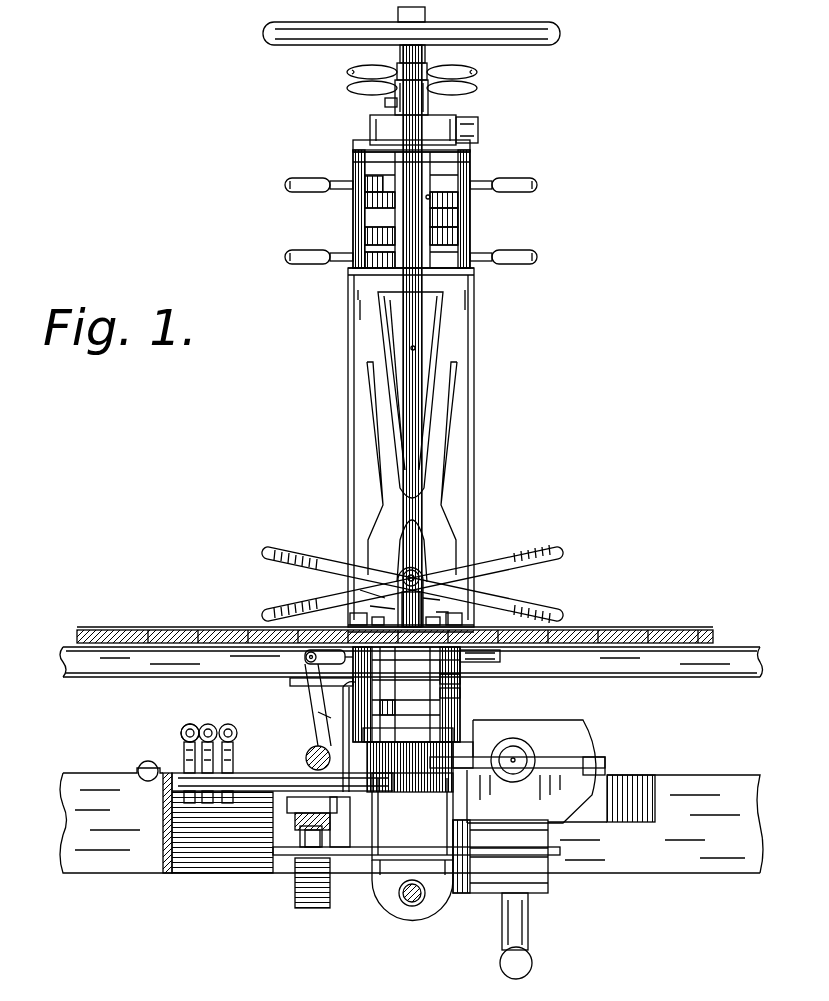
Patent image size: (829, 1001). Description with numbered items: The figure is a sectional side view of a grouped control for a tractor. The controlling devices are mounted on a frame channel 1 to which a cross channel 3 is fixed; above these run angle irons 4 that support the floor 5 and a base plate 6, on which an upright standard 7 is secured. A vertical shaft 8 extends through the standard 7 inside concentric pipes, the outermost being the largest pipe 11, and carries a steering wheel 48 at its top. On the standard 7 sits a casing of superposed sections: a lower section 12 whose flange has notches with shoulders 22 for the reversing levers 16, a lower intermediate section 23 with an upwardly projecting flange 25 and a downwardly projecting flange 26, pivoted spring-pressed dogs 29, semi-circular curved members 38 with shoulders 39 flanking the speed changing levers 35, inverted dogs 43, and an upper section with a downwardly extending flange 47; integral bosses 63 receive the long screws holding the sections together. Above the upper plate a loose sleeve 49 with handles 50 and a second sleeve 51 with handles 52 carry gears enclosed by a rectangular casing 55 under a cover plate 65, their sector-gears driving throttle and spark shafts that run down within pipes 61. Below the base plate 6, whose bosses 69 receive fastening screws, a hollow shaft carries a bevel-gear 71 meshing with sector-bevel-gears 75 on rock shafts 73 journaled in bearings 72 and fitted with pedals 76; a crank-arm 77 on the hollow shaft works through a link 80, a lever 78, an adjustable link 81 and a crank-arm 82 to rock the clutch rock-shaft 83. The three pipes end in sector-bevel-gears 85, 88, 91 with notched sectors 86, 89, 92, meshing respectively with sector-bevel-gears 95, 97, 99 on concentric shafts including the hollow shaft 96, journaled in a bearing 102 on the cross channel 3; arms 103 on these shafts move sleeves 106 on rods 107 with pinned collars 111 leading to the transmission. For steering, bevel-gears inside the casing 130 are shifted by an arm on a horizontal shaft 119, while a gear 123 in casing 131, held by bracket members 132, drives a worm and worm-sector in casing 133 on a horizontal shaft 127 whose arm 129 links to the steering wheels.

The channel 1 is at (655, 824).
The cross channel 3 is at (160, 813).
The angle iron 4 is at (648, 653).
The floor 5 is at (135, 630).
The base plate 6 is at (444, 630).
The upright frame or standard 7 is at (358, 457).
The shaft 8 is at (425, 62).
The largest pipe 11 is at (400, 327).
The lower section 12 is at (397, 273).
The hand lever (reversing lever) 16 is at (535, 256).
The shoulder 22 is at (362, 263).
The lower intermediate section 23 is at (430, 246).
The upwardly projecting flange 25 is at (372, 238).
The downwardly projecting flange 26 is at (460, 220).
The dog 29 is at (362, 199).
The hand lever (speed changing lever) 35 is at (535, 183).
The curved member 38 is at (430, 197).
The shoulder 39 is at (362, 181).
The dog 43 is at (460, 173).
The downwardly extending flange 47 is at (457, 148).
The steering wheel 48 is at (497, 36).
The loose sleeve 49 is at (406, 74).
The arm or handle 50 is at (350, 71).
The second sleeve 51 is at (428, 100).
The arm or handle 52 is at (350, 89).
The rectangular casing 55 is at (395, 128).
The pipe 61 is at (415, 348).
The boss 63 is at (385, 152).
The cover plate 65 is at (387, 103).
The boss 69 is at (304, 660).
The bevel-gear 71 is at (383, 605).
The bearing 72 is at (422, 604).
The rock shaft 73 is at (416, 576).
The sector-bevel-gear 75 is at (378, 604).
The pedal 76 is at (288, 556).
The crank-arm 77 is at (485, 681).
The lever 78 is at (517, 653).
The link 80 is at (468, 628).
The adjustable link 81 is at (350, 620).
The crank-arm 82 is at (317, 723).
The rock-shaft 83 is at (306, 762).
The sector-bevel-gear 85 is at (393, 678).
The sector 86 is at (457, 677).
The sector-bevel-gear 88 is at (393, 693).
The sector 89 is at (464, 693).
The sector-bevel-gear 91 is at (397, 713).
The sector 92 is at (468, 730).
The sector-bevel-gear 95 is at (345, 730).
The hollow shaft 96 is at (280, 780).
The sector-bevel-gear 97 is at (360, 783).
The sector-bevel-gear 99 is at (378, 787).
The bearing 102 is at (177, 768).
The arm 103 is at (228, 783).
The sleeve 106 is at (224, 724).
The rod 107 is at (231, 740).
The collar 111 is at (181, 735).
The horizontal shaft 119 is at (407, 900).
The gear 123 is at (500, 856).
The horizontal shaft 127 is at (515, 762).
The arm 129 is at (517, 933).
The casing 130 is at (432, 838).
The casing 131 is at (313, 888).
The bracket member 132 is at (313, 830).
The casing 133 is at (576, 748).